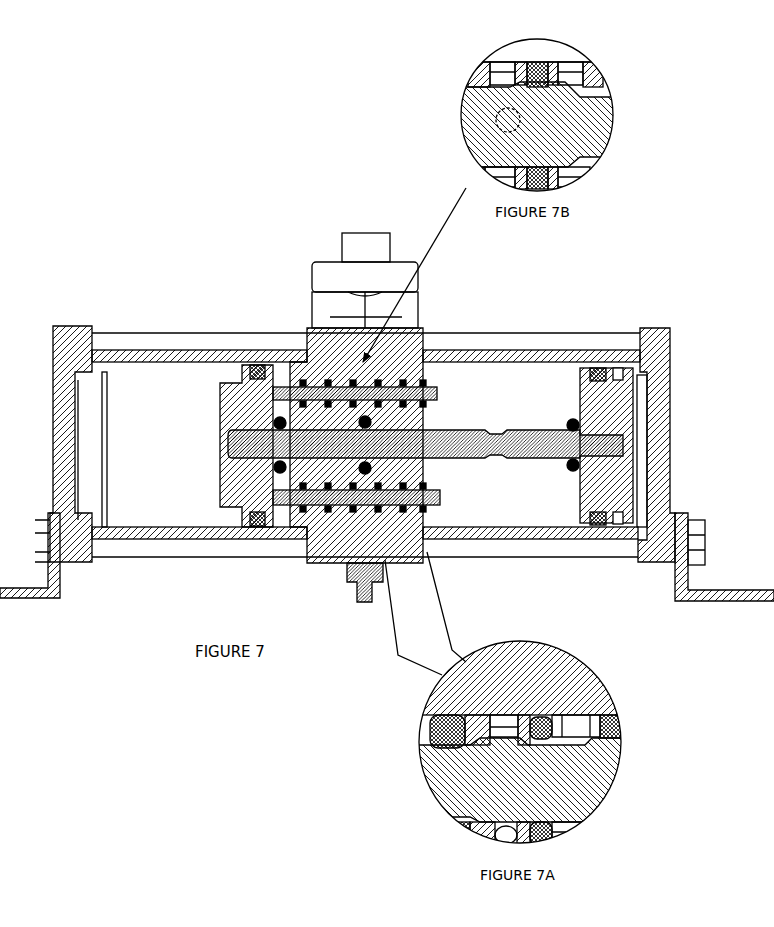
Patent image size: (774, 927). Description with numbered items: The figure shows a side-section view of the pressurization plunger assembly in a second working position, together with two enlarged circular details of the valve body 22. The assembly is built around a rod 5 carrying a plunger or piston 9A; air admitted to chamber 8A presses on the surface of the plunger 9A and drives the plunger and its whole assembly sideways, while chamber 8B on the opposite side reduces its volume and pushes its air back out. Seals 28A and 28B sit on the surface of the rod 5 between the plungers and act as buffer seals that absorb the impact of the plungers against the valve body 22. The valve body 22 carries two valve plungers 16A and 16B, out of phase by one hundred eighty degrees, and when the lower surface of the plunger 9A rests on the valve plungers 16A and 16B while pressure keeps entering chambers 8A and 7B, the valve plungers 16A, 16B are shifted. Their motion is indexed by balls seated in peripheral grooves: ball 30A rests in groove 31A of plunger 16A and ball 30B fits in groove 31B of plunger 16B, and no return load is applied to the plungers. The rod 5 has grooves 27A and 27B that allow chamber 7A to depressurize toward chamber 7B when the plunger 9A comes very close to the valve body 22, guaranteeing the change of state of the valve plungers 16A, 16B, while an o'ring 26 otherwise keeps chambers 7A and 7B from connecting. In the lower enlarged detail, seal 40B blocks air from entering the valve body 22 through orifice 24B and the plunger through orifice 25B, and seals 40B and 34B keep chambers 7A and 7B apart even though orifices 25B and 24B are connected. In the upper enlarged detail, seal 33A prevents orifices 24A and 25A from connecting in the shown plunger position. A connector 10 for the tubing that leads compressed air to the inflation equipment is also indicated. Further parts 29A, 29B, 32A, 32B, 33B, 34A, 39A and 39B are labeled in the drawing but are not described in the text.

In FIG. 7, the rod 5 is at (512, 440).
In FIG. 7, the chamber 7A is at (262, 530).
In FIG. 7, the chamber 7B is at (530, 520).
In FIG. 7, the chamber 8A is at (147, 500).
In FIG. 7, the chamber 8B is at (640, 565).
In FIG. 7, the plunger 9A is at (225, 385).
In FIG. 7, the connector 10 is at (360, 598).
In FIG. 7, the valve plunger 16A is at (445, 392).
In FIG. 7, the valve plunger 16B is at (445, 505).
In FIG. 7, the valve body 22 is at (400, 345).
In FIG. 7B, the orifice 24A is at (578, 72).
In FIG. 7A, the orifice 24B is at (494, 840).
In FIG. 7B, the orifice 25A is at (500, 120).
In FIG. 7A, the orifice 25B is at (596, 773).
In FIG. 7, the o'ring 26 is at (440, 410).
In FIG. 7, the groove 27A is at (348, 563).
In FIG. 7, the groove 27B is at (498, 432).
In FIG. 7, the seal 28A is at (246, 537).
In FIG. 7, the seal 28B is at (576, 472).
In FIG. 7, the first port 29A is at (230, 445).
In FIG. 7, the second port 29B is at (440, 478).
In FIG. 7, the ball 30A is at (275, 410).
In FIG. 7, the ball 30B is at (455, 490).
In FIG. 7, the groove 31A is at (300, 378).
In FIG. 7, the groove 31B is at (445, 525).
In FIG. 7, the first backup ring 32A is at (308, 382).
In FIG. 7, the second backup ring 32B is at (437, 520).
In FIG. 7B, the seal 33A is at (538, 70).
In FIG. 7A, the second seal ring 33B is at (545, 737).
In FIG. 7, the first wiper seal 34A is at (342, 380).
In FIG. 7, the seal 34B is at (388, 520).
In FIG. 7A, the seal 34B is at (615, 720).
In FIG. 7, the first retainer 39A is at (322, 380).
In FIG. 7, the second retainer 39B is at (425, 530).
In FIG. 7A, the seal 40B is at (438, 722).